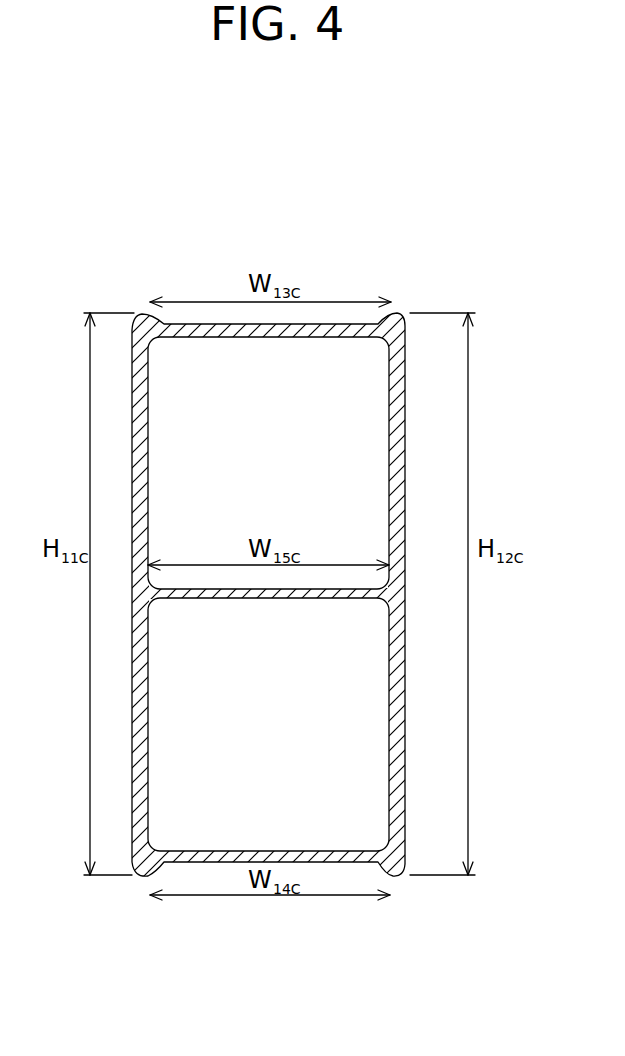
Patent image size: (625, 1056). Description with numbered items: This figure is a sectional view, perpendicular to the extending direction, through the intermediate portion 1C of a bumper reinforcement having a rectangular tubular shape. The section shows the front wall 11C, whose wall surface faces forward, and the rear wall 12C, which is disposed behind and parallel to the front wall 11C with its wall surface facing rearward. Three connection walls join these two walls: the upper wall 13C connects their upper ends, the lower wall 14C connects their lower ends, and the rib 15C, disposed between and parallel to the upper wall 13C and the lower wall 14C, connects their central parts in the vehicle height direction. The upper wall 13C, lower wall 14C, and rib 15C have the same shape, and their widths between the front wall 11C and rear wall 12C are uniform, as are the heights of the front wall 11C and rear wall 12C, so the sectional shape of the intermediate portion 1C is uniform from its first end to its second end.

The intermediate portion 1C is at (234, 511).
The front wall 11C is at (148, 480).
The rear wall 12C is at (388, 527).
The upper wall 13C is at (270, 338).
The lower wall 14C is at (257, 851).
The rib 15C is at (268, 598).